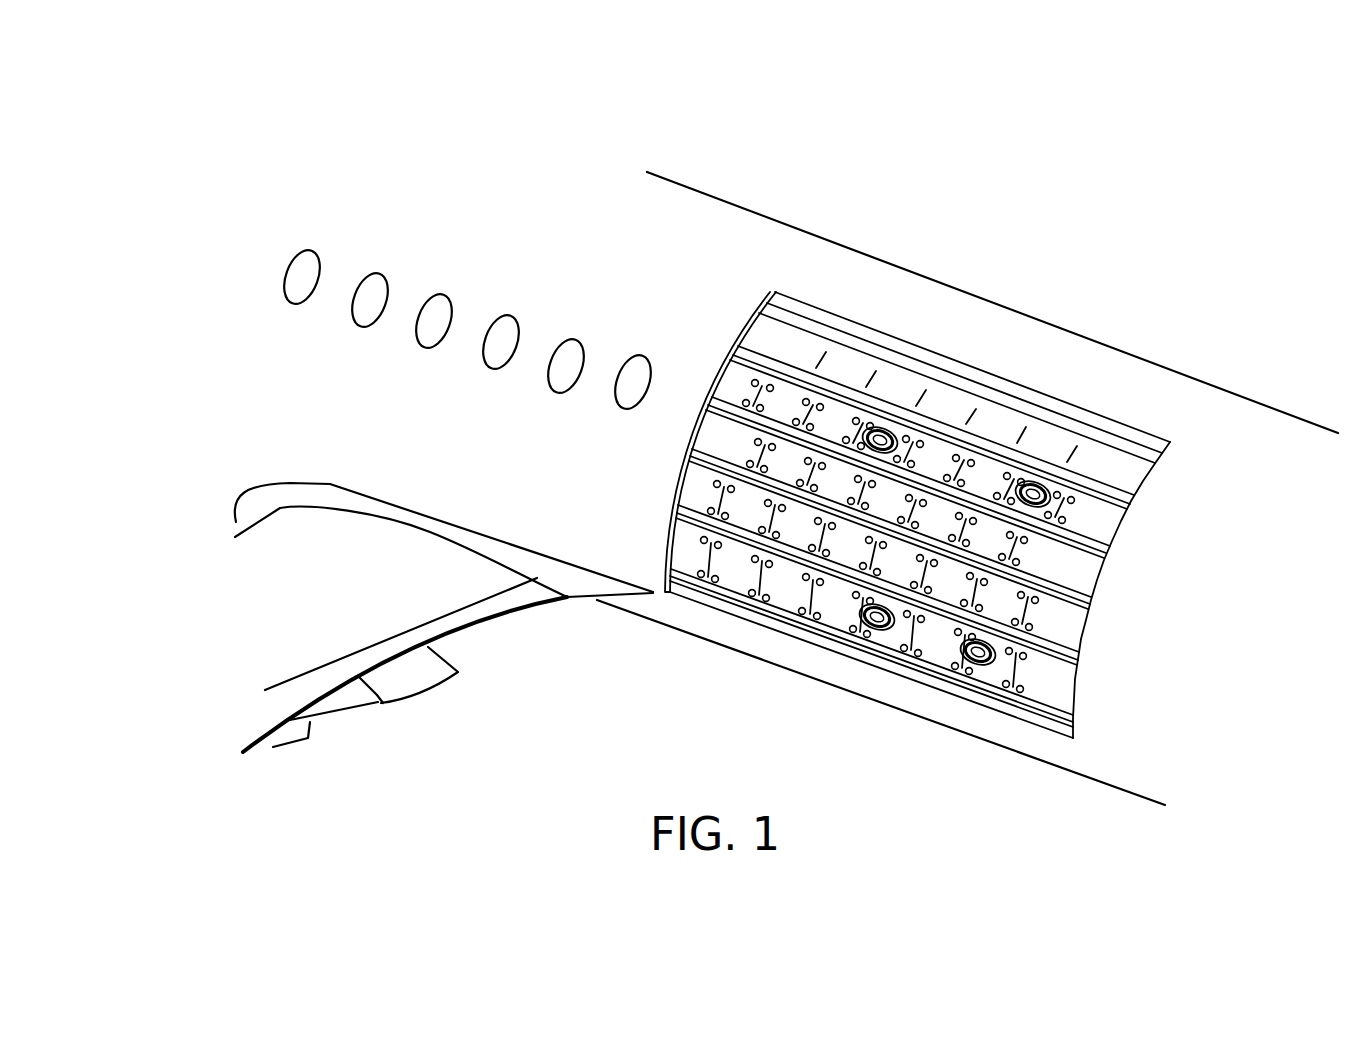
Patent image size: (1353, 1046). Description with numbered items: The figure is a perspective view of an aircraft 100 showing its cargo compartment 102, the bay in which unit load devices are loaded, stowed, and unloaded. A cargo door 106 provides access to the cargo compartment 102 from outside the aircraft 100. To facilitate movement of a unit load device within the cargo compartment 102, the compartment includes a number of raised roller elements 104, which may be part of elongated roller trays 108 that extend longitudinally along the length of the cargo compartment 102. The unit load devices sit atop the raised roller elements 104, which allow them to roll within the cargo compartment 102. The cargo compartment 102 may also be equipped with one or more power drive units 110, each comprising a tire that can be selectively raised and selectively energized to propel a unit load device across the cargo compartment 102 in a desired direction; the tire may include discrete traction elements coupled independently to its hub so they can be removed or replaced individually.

The aircraft 100 is at (504, 127).
The cargo compartment 102 is at (935, 519).
The raised roller elements 104 is at (853, 593).
The cargo door 106 is at (1100, 556).
The elongated roller trays 108 is at (830, 423).
The power drive units (PDUs) 110 is at (1040, 490).